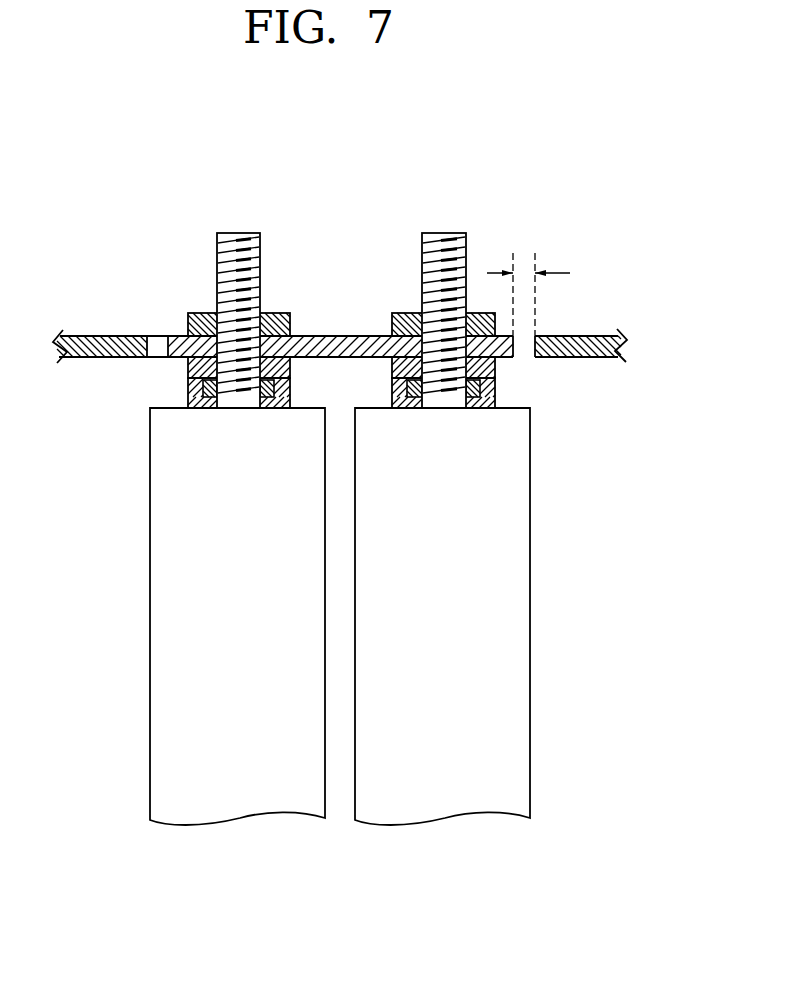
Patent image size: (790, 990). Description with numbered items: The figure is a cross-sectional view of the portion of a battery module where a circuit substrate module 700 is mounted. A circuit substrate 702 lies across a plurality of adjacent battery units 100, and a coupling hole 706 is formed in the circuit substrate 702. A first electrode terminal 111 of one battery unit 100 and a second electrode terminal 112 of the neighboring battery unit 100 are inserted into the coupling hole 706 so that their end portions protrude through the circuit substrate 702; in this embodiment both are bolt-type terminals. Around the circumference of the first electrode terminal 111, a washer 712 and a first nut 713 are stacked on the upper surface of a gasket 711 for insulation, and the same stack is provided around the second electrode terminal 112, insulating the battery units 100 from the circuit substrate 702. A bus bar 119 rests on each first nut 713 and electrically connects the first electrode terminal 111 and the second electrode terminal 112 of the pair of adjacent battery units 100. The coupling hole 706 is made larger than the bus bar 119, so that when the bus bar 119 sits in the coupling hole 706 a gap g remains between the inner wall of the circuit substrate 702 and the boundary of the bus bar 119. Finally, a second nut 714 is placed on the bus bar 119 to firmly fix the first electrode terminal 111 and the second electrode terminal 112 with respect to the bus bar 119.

The circuit substrate module 700 is at (142, 203).
The battery unit 100 is at (256, 702).
The first electrode terminal 111 is at (239, 233).
The second electrode terminal 112 is at (444, 233).
The bus bar 119 is at (342, 336).
The circuit substrate 702 is at (103, 341).
The coupling hole 706 is at (523, 352).
The gasket 711 is at (190, 401).
The washer 712 is at (188, 384).
The first nut 713 is at (192, 345).
The second nut 714 is at (208, 318).
The gap g is at (528, 289).